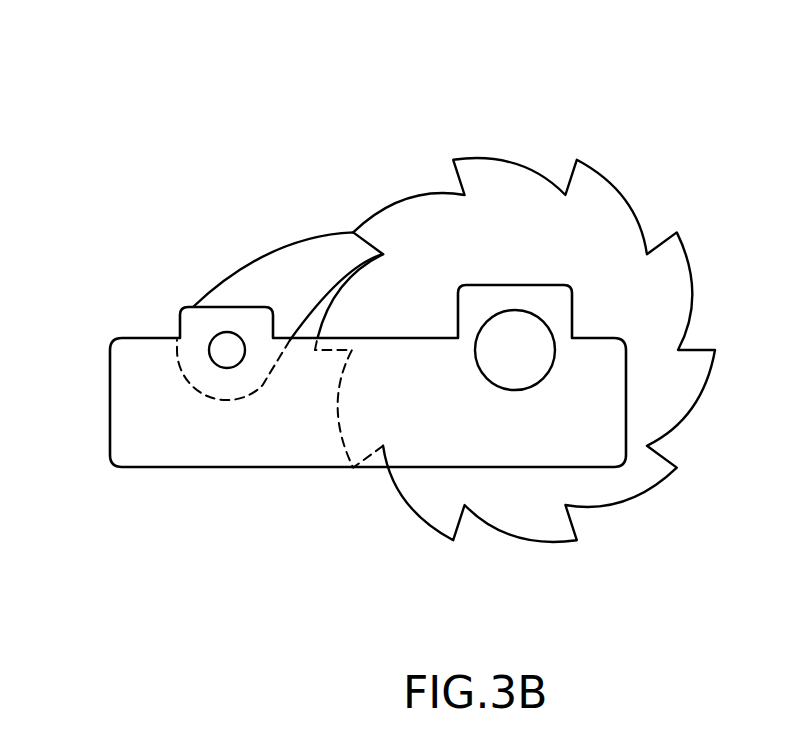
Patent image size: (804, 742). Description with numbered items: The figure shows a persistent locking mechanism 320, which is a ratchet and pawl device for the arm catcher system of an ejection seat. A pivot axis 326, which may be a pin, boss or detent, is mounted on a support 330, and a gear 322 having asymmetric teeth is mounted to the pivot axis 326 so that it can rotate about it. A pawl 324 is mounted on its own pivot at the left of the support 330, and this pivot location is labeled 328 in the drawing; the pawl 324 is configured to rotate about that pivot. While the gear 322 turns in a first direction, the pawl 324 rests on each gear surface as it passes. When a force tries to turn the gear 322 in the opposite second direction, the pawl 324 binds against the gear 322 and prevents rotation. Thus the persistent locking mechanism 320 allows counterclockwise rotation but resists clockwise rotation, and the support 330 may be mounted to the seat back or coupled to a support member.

The persistent locking mechanism 320 is at (284, 113).
The gear 322 is at (606, 134).
The pawl 324 is at (224, 233).
The pivot axis 326 is at (533, 358).
The pivot pin 328 is at (218, 340).
The support 330 is at (137, 412).